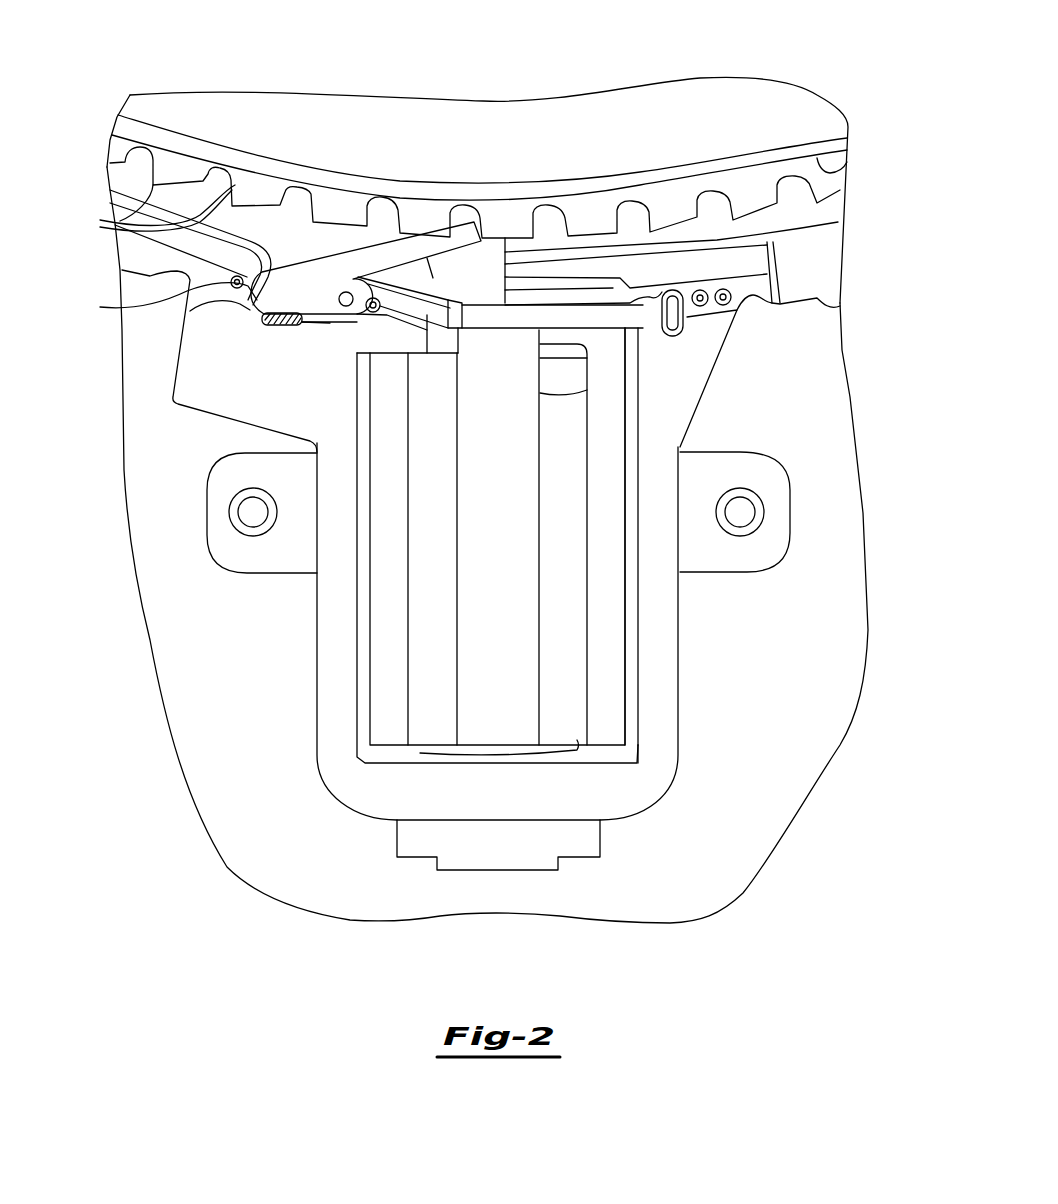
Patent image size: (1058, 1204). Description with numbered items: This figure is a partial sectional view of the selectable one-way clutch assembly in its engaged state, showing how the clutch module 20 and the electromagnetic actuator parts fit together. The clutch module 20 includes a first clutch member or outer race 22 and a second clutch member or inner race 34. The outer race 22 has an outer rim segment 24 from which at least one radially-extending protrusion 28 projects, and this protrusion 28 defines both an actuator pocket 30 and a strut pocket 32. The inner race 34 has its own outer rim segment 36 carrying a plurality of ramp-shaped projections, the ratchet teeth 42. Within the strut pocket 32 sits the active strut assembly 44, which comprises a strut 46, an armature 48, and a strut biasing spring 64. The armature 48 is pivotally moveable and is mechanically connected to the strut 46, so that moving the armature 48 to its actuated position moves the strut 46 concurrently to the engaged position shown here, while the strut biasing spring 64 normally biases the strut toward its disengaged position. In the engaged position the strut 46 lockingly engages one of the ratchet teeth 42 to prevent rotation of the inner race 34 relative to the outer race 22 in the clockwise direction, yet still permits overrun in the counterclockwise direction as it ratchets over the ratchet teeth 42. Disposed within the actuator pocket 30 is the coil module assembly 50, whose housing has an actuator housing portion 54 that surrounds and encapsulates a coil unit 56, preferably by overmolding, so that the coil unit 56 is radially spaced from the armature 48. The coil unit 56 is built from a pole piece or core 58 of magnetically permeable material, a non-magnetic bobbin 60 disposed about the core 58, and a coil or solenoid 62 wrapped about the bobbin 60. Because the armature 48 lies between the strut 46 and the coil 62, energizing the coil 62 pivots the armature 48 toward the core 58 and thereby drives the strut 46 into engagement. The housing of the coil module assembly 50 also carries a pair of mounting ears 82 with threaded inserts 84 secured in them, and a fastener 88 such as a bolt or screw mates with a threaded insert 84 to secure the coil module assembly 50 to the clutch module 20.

The clutch module 20 is at (813, 64).
The outer race 22 is at (817, 262).
The outer rim segment 24 is at (813, 297).
The radially-extending protrusion 28 is at (680, 673).
The actuator pocket 30 is at (630, 638).
The strut pocket 32 is at (187, 297).
The inner race 34 is at (490, 120).
The outer rim segment 36 is at (817, 162).
The ratchet teeth 42 is at (100, 220).
The active strut assembly 44 is at (317, 315).
The strut 46 is at (352, 250).
The armature 48 is at (598, 262).
The coil module assembly 50 is at (640, 730).
The actuator housing portion 54 is at (367, 717).
The coil unit 56 is at (397, 672).
The core 58 is at (540, 397).
The bobbin 60 is at (427, 610).
The coil 62 is at (627, 593).
The strut biasing spring 64 is at (277, 322).
The mounting ears 82 is at (782, 462).
The threaded inserts 84 is at (253, 512).
The fastener 88 is at (743, 512).